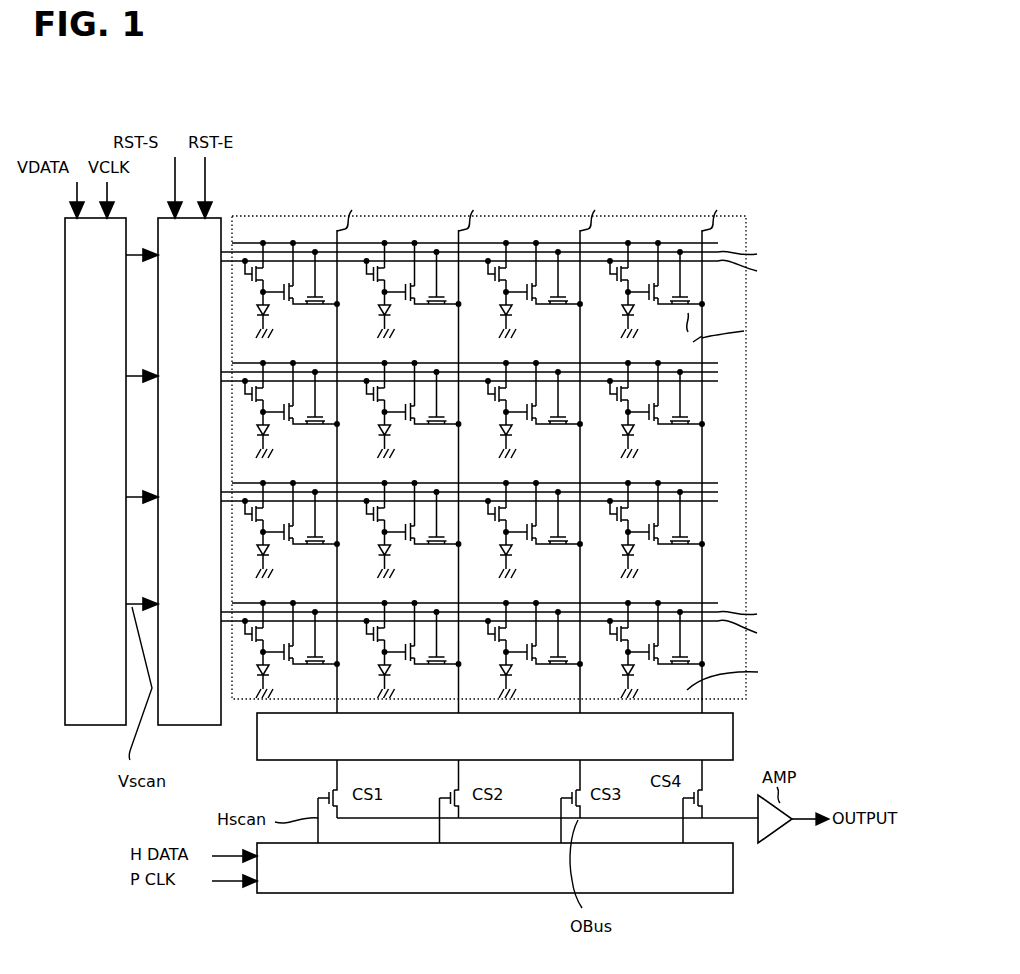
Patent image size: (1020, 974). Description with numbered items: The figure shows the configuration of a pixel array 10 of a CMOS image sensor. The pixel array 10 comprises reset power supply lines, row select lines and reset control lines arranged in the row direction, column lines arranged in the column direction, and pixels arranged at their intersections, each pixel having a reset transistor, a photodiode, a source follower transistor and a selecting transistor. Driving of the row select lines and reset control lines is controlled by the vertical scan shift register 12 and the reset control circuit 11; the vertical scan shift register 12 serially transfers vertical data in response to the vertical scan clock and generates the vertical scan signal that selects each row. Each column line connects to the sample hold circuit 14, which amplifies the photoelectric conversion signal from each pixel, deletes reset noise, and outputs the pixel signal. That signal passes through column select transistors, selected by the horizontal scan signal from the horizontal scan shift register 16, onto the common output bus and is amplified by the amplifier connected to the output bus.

The pixel array 10 is at (515, 442).
The reset control circuit 11 is at (189, 471).
The vertical scan shift register 12 is at (95, 471).
The sample hold circuit 14 is at (495, 736).
The horizontal scan shift register 16 is at (495, 868).